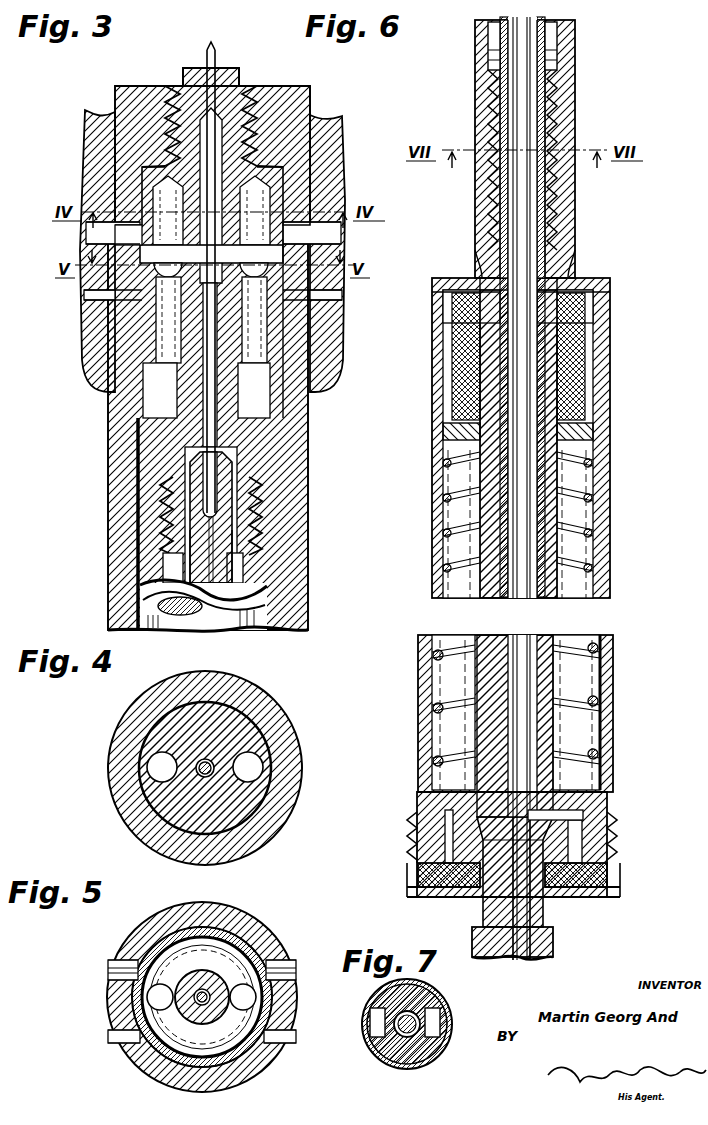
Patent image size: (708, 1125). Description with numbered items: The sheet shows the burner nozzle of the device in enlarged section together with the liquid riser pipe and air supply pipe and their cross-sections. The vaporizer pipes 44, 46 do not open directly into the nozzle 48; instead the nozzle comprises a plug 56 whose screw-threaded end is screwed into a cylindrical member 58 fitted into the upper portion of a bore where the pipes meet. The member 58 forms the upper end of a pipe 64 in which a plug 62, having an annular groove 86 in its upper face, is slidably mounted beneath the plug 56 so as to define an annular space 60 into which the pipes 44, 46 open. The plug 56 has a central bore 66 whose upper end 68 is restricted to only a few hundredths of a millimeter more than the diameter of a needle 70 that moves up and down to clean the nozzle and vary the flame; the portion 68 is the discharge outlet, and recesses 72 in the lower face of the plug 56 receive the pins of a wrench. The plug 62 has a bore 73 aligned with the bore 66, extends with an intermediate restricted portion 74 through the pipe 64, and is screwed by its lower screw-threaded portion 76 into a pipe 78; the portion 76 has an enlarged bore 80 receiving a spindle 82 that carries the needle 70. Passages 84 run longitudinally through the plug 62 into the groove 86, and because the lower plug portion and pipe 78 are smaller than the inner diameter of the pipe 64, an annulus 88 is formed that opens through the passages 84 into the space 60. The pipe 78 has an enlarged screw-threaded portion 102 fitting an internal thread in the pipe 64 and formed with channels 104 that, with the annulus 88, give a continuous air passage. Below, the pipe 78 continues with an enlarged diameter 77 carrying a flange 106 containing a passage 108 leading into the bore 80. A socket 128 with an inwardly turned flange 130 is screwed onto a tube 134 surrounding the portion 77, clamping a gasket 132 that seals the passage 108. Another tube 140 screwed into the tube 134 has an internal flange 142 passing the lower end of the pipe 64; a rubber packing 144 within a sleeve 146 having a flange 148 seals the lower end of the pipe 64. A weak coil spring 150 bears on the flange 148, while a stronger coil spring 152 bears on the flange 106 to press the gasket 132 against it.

In FIG. 3, the vaporizer pipe 44 is at (98, 295).
In FIG. 5, the vaporizer pipe 44 is at (115, 1016).
In FIG. 3, the vaporizer pipe 46 is at (330, 300).
In FIG. 5, the vaporizer pipe 46 is at (280, 983).
In FIG. 3, the nozzle 48 is at (240, 70).
In FIG. 3, the plug 56 is at (262, 105).
In FIG. 4, the plug 56 is at (225, 720).
In FIG. 3, the cylindrical member 58 is at (300, 140).
In FIG. 4, the cylindrical member 58 is at (130, 718).
In FIG. 3, the annular space 60 is at (270, 255).
In FIG. 3, the plug 62 is at (270, 340).
In FIG. 5, the plug 62 is at (215, 945).
In FIG. 3, the pipe 64 is at (290, 428).
In FIG. 5, the pipe 64 is at (125, 943).
In FIG. 6, the pipe 64 is at (575, 90).
In FIG. 7, the pipe 64 is at (445, 1005).
In FIG. 3, the central bore 66 is at (222, 175).
In FIG. 4, the central bore 66 is at (200, 775).
In FIG. 3, the restricted upper end 68 is at (197, 80).
In FIG. 3, the needle 70 is at (215, 50).
In FIG. 4, the needle 70 is at (203, 776).
In FIG. 5, the needle 70 is at (196, 1003).
In FIG. 3, the recesses 72 is at (255, 197).
In FIG. 4, the recesses 72 is at (244, 767).
In FIG. 3, the bore 73 is at (220, 378).
In FIG. 5, the bore 73 is at (205, 1000).
In FIG. 3, the intermediate restricted portion 74 is at (170, 395).
In FIG. 5, the intermediate restricted portion 74 is at (270, 1035).
In FIG. 3, the lower screw-threaded portion 76 is at (175, 498).
In FIG. 6, the enlarged diameter portion 77 is at (545, 545).
In FIG. 3, the pipe 78 is at (265, 600).
In FIG. 6, the pipe 78 is at (540, 213).
In FIG. 3, the enlarged bore 80 is at (190, 460).
In FIG. 6, the enlarged bore 80 is at (530, 925).
In FIG. 3, the spindle 82 is at (215, 530).
In FIG. 6, the spindle 82 is at (540, 900).
In FIG. 7, the spindle 82 is at (410, 1035).
In FIG. 3, the bores or passages 84 is at (247, 325).
In FIG. 5, the bores or passages 84 is at (230, 998).
In FIG. 3, the annular groove 86 is at (160, 262).
In FIG. 5, the annular groove 86 is at (280, 945).
In FIG. 3, the annulus 88 is at (135, 445).
In FIG. 6, the annulus 88 is at (478, 47).
In FIG. 6, the enlarged screw-threaded portion 102 is at (545, 128).
In FIG. 7, the enlarged screw-threaded portion 102 is at (440, 990).
In FIG. 7, the channels 104 is at (435, 1025).
In FIG. 6, the flange 106 is at (440, 822).
In FIG. 6, the passage or channel 108 is at (575, 850).
In FIG. 6, the socket 128 is at (410, 850).
In FIG. 6, the inwardly turned flange 130 is at (438, 897).
In FIG. 6, the gasket 132 is at (440, 875).
In FIG. 6, the tube 134 is at (610, 690).
In FIG. 6, the tube 140 is at (607, 477).
In FIG. 6, the internal flange 142 is at (445, 280).
In FIG. 6, the packing 144 is at (590, 357).
In FIG. 6, the sleeve 146 is at (607, 322).
In FIG. 6, the inwardly turned flange 148 is at (590, 440).
In FIG. 6, the coil spring 150 is at (585, 510).
In FIG. 6, the coil spring 152 is at (605, 650).